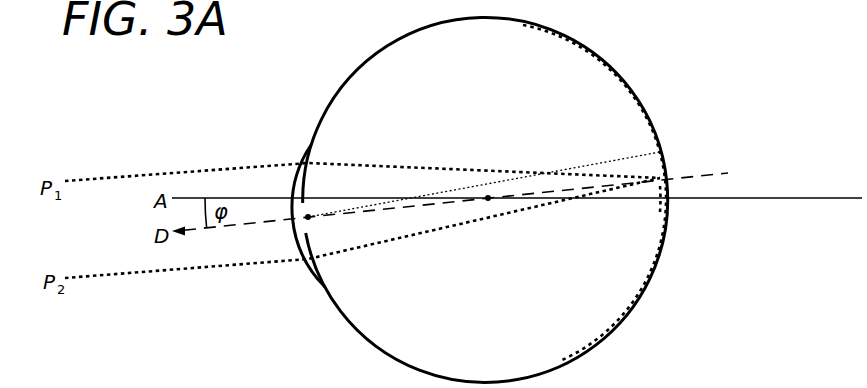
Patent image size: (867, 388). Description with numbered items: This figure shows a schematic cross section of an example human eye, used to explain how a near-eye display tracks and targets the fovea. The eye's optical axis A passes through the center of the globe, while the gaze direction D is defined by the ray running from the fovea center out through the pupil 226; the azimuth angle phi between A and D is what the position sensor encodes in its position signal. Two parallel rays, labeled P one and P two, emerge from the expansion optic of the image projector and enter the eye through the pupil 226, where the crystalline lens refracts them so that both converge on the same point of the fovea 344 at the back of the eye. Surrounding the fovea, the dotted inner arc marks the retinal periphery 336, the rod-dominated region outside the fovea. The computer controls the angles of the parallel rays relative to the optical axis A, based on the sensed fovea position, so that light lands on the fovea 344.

The pupil 226 is at (318, 226).
The retinal periphery 336 is at (637, 108).
The fovea 344 is at (663, 193).